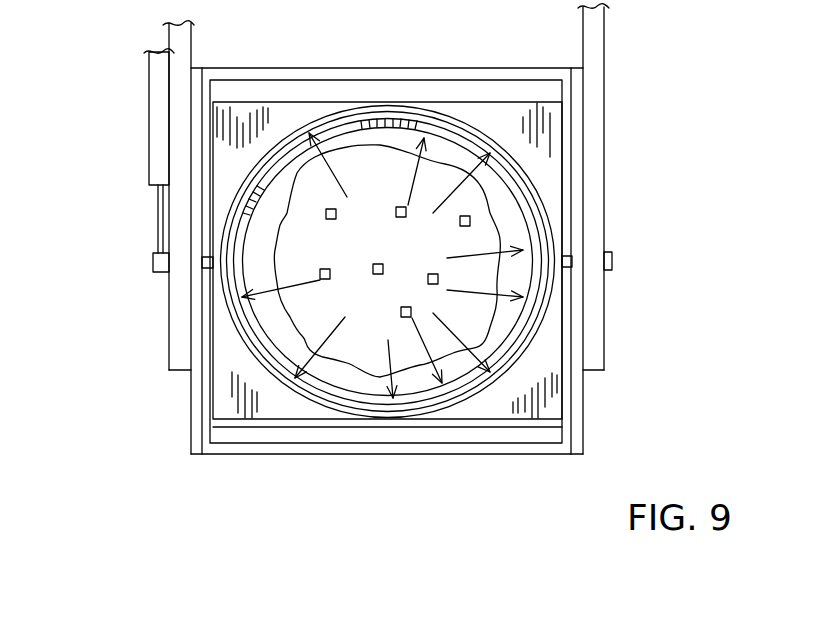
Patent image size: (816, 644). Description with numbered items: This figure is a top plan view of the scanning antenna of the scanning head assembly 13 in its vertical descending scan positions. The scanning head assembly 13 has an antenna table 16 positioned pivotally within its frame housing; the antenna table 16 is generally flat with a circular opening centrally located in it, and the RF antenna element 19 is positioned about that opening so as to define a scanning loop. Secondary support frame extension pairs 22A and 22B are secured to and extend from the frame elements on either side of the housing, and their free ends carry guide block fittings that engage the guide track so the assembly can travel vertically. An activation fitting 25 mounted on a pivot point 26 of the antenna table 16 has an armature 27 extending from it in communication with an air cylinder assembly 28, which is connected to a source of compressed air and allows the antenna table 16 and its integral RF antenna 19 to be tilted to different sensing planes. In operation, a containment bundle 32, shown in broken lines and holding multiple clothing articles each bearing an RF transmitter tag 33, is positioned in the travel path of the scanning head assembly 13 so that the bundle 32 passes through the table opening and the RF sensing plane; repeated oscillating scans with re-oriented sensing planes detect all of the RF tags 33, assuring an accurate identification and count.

The scanning head assembly 13 is at (574, 142).
The antenna table 16 is at (277, 408).
The RF antenna element 19 is at (522, 350).
The secondary support frame extension pair 22A is at (176, 323).
The secondary support frame extension pair 22B is at (598, 330).
The activation fitting 25 is at (153, 265).
The pivot point 26 is at (572, 256).
The armature 27 is at (158, 220).
The air cylinder assembly 28 is at (148, 106).
The containment bundle 32 is at (452, 360).
The RF transmitter tag 33 is at (360, 350).
The RF field RF is at (300, 352).